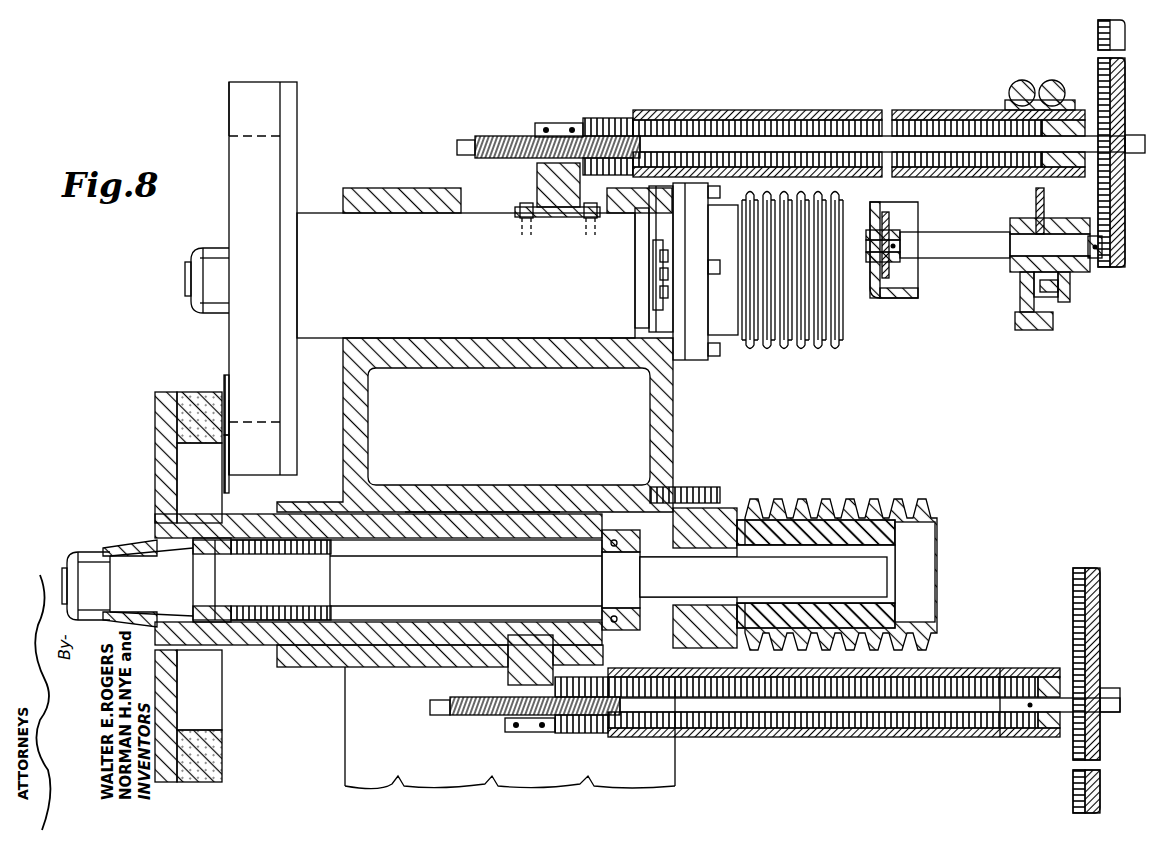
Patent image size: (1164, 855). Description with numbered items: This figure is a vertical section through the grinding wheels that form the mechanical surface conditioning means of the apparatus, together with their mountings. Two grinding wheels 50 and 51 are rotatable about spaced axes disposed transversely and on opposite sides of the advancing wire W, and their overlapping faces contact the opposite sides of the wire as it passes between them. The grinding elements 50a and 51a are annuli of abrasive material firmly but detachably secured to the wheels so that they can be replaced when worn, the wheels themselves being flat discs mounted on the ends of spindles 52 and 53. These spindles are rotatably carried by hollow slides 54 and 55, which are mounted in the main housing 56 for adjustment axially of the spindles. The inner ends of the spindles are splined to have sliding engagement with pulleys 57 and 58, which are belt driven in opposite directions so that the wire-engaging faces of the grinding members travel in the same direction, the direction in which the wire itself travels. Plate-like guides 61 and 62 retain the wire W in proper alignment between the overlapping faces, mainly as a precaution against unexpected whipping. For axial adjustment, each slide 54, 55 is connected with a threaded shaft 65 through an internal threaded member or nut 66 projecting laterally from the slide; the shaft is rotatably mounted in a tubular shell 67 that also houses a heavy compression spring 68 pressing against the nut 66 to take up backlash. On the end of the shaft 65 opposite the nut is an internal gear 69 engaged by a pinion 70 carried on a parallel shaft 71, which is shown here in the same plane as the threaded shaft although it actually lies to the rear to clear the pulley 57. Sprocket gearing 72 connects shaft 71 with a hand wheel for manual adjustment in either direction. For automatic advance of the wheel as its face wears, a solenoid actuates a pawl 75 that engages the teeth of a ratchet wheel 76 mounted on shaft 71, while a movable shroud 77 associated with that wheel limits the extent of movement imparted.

The grinding wheel 50 is at (297, 148).
The grinding element 50a is at (229, 108).
The grinding wheel 51 is at (155, 472).
The grinding element 51a is at (181, 392).
The spindle 52 is at (185, 283).
The spindle 53 is at (468, 570).
The hollow slide 54 is at (523, 327).
The hollow slide 55 is at (507, 512).
The main housing 56 is at (676, 430).
The pulley 57 is at (808, 325).
The pulley 58 is at (800, 499).
The plate-like guide 61 is at (224, 378).
The plate-like guide 62 is at (224, 488).
The wire W is at (230, 430).
The threaded shaft 65 is at (773, 110).
The internal threaded member or nut 66 is at (537, 176).
The tubular shell 67 is at (912, 110).
The compression spring 68 is at (692, 110).
The internal gear 69 is at (1125, 228).
The pinion 70 is at (1100, 260).
The shaft 71 is at (973, 262).
The sprocket gearing 72 is at (890, 222).
The pawl 75 is at (1045, 313).
The ratchet wheel 76 is at (1036, 200).
The movable shroud 77 is at (1052, 305).